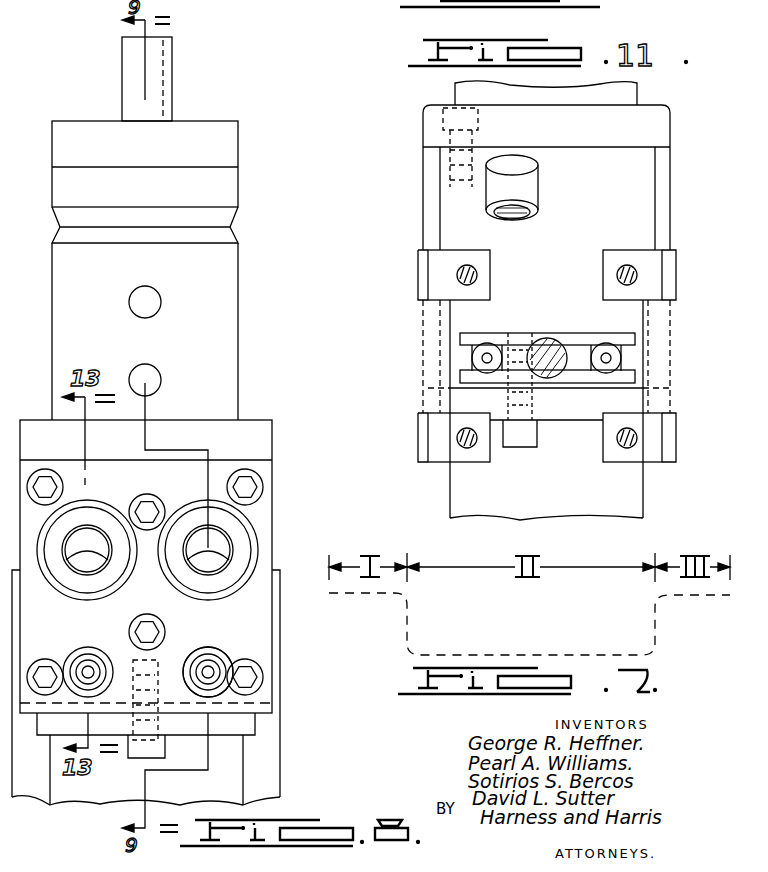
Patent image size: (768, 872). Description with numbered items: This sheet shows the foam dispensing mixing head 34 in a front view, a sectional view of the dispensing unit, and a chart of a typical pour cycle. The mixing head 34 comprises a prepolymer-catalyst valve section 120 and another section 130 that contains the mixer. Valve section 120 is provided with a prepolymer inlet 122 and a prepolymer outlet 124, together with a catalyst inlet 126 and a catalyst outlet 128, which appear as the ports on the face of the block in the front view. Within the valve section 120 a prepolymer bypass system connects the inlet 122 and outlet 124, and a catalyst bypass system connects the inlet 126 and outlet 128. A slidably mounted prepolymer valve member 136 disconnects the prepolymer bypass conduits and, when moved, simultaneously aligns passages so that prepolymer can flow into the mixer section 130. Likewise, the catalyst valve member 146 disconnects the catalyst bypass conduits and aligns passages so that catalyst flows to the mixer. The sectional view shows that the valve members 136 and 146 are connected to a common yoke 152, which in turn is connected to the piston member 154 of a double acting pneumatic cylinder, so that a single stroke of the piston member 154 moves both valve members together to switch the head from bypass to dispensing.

In FIG. 8, the mixing head 34 is at (288, 496).
In FIG. 8, the prepolymer-catalyst valve section 120 is at (274, 513).
In FIG. 8, the prepolymer inlet 122 is at (214, 670).
In FIG. 8, the prepolymer outlet 124 is at (212, 556).
In FIG. 8, the catalyst inlet 126 is at (72, 660).
In FIG. 11, the catalyst inlet 126 is at (512, 218).
In FIG. 8, the catalyst outlet 128 is at (86, 556).
In FIG. 8, the mixer section 130 is at (226, 784).
In FIG. 8, the prepolymer valve member 136 is at (205, 660).
In FIG. 11, the prepolymer valve member 136 is at (623, 358).
In FIG. 8, the catalyst valve member 146 is at (90, 668).
In FIG. 11, the catalyst valve member 146 is at (470, 354).
In FIG. 11, the yoke 152 is at (522, 318).
In FIG. 11, the piston member 154 is at (545, 340).